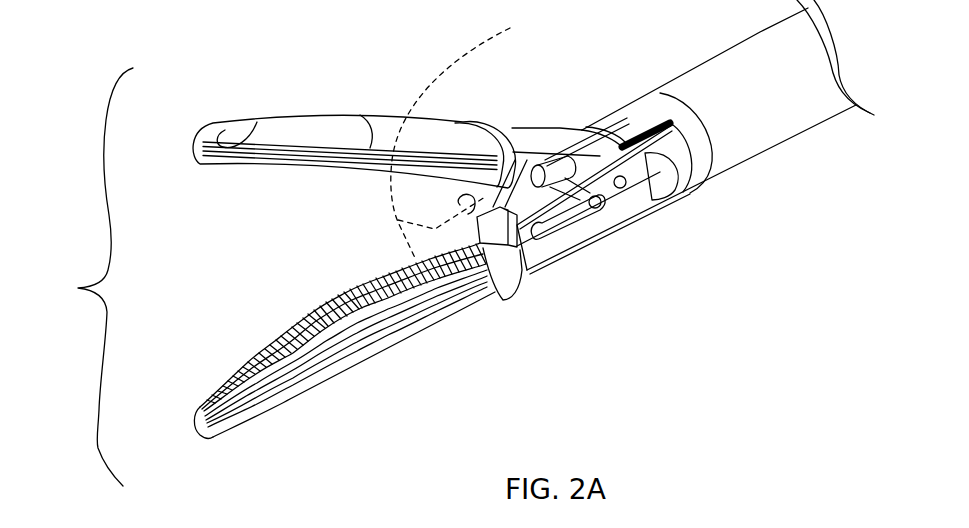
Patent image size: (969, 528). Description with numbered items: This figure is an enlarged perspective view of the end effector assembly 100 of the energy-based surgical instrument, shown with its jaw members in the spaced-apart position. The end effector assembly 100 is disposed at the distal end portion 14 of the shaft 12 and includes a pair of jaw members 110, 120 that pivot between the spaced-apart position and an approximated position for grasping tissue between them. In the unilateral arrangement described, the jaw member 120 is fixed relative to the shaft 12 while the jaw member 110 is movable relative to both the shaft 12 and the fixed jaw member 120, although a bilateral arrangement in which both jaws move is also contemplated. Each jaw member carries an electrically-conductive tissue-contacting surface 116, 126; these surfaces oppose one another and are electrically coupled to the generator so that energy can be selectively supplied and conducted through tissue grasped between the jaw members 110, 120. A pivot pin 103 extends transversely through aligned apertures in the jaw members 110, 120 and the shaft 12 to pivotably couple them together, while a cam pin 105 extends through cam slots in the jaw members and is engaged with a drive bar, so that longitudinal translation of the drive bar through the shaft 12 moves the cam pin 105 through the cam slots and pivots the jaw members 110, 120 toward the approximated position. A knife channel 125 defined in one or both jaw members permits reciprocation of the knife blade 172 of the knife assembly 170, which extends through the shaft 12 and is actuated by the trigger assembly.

The end effector assembly 100 is at (79, 277).
The shaft 12 is at (817, 105).
The distal end portion 14 is at (735, 154).
The jaw member 110 is at (340, 96).
The electrically-conductive tissue-contacting surface 116 is at (280, 183).
The knife blade 172 is at (470, 136).
The knife assembly 170 is at (430, 198).
The pivot pin 103 is at (622, 188).
The cam pin 105 is at (596, 208).
The jaw member 120 is at (374, 386).
The electrically-conductive tissue-contacting surface 126 is at (250, 343).
The knife channel 125 is at (287, 398).